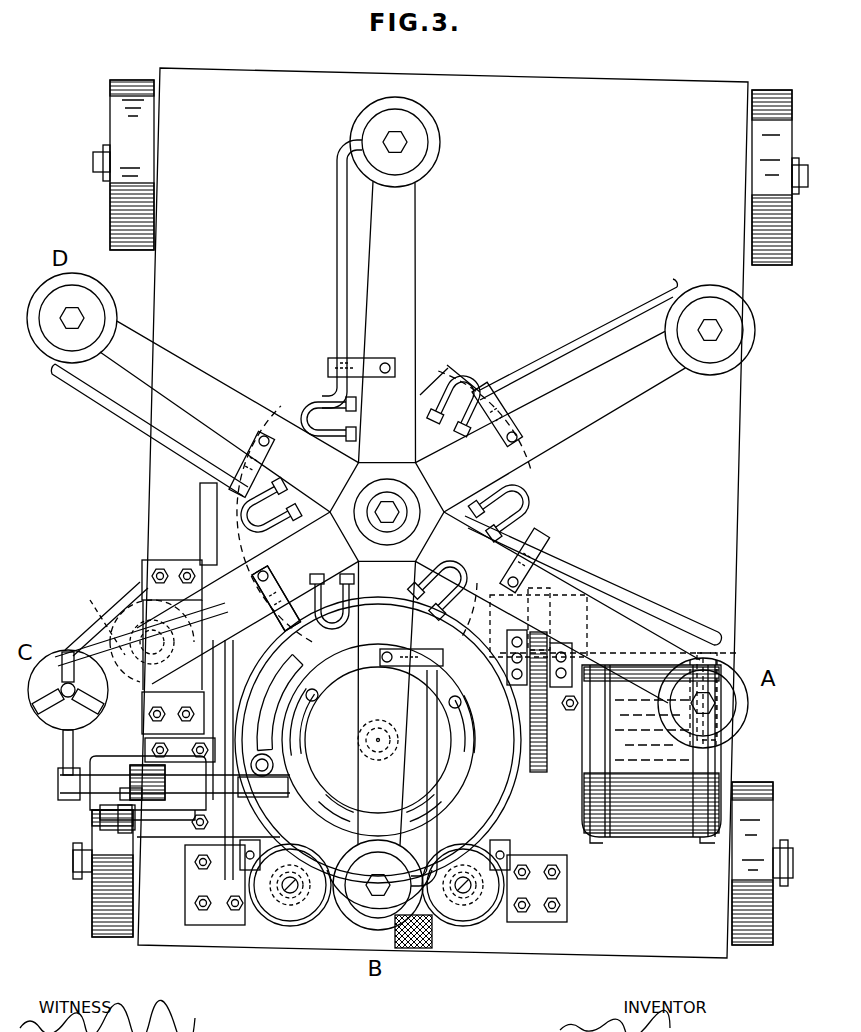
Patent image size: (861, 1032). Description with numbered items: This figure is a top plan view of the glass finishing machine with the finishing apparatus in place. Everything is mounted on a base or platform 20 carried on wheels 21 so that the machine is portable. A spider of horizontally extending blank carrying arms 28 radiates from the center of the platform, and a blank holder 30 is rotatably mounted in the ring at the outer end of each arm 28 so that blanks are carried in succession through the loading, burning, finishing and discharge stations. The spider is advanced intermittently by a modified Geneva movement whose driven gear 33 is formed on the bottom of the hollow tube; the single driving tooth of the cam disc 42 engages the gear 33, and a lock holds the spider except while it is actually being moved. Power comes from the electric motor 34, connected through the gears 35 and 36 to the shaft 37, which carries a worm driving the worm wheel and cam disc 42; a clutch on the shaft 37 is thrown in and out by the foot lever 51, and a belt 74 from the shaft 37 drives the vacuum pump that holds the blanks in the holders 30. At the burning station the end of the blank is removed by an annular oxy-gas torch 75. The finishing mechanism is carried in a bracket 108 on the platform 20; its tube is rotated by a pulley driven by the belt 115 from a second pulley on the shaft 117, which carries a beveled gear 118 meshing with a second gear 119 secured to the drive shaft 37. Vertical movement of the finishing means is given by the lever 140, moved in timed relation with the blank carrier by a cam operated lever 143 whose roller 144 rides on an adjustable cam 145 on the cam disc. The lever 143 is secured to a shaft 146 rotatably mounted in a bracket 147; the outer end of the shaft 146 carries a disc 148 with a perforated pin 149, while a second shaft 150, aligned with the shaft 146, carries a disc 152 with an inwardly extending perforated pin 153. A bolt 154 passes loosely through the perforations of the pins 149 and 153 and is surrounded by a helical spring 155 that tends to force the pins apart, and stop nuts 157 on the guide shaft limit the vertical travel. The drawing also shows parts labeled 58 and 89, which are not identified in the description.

The base or platform 20 is at (692, 87).
The wheels 21 is at (110, 110).
The blank carrying arms 28 is at (403, 268).
The blank holder 30 is at (440, 142).
The pipe 58 is at (337, 286).
The belt 74 is at (200, 493).
The shaft 117 is at (176, 560).
The bracket 108 is at (128, 600).
The beveled gear 118 is at (97, 617).
The belt 115 is at (76, 650).
The second gear 119 is at (262, 578).
The gear 36 is at (543, 647).
The shaft 37 is at (587, 667).
The driven gear 33 is at (148, 728).
The lever 140 is at (65, 752).
The perforated pin 149 is at (130, 762).
The second shaft 150 is at (88, 810).
The stop nuts 157 is at (73, 800).
The perforated pin 153 is at (120, 805).
The helical spring 155 is at (182, 818).
The disc 152 is at (92, 812).
The bracket 147 is at (208, 870).
The bolt 154 is at (128, 815).
The disc 148 is at (135, 798).
The shaft 146 is at (228, 875).
The pulley 89 is at (290, 920).
The annular oxy-gas torch 75 is at (360, 932).
The foot lever 51 is at (420, 950).
The gear 35 is at (547, 774).
The cam disc 42 is at (298, 712).
The adjustable cam 145 is at (265, 730).
The roller 144 is at (270, 745).
The cam operated lever 143 is at (290, 770).
The electric motor 34 is at (655, 812).